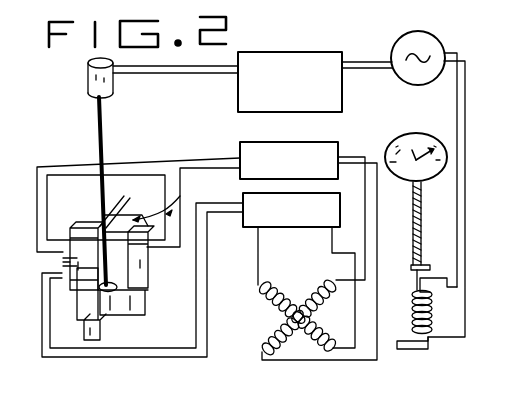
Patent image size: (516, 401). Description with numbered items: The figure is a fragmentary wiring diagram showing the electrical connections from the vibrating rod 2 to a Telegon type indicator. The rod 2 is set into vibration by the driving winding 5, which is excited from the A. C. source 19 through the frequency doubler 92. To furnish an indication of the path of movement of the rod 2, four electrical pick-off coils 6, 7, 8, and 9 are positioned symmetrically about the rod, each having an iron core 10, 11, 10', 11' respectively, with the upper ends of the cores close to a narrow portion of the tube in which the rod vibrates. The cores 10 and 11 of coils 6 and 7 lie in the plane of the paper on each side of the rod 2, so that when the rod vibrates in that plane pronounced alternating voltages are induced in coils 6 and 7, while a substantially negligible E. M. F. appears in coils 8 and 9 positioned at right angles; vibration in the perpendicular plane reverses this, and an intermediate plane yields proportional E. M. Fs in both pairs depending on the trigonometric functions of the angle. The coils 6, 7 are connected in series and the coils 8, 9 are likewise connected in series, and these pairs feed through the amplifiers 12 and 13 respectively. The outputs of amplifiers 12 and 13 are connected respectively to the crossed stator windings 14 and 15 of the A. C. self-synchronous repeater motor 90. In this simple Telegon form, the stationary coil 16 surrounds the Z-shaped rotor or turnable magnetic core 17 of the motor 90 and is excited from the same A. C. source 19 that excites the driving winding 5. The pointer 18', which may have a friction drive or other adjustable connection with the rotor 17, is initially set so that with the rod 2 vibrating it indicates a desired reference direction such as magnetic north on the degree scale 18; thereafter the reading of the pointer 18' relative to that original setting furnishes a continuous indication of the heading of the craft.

The rod 2 is at (104, 140).
The driving winding 5 is at (88, 80).
The electrical pick-off coil 6 is at (64, 262).
The electrical pick-off coil 7 is at (148, 256).
The electrical pick-off coil 8 is at (85, 309).
The electrical pick-off coil 9 is at (120, 238).
The iron core 10 is at (87, 242).
The iron core 10' is at (40, 249).
The iron core 11 is at (170, 201).
The iron core 11' is at (125, 203).
The amplifier 12 is at (303, 136).
The amplifier 13 is at (310, 227).
The crossed stator winding 14 is at (310, 290).
The crossed stator winding 15 is at (313, 327).
The stationary coil 16 is at (436, 307).
The Z-shaped rotor 17 is at (410, 349).
The degree scale 18 is at (419, 211).
The pointer 18' is at (402, 132).
The A. C. source 19 is at (437, 36).
The A. C. self-synchronous repeater motor 90 is at (405, 321).
The frequency doubler 92 is at (302, 52).